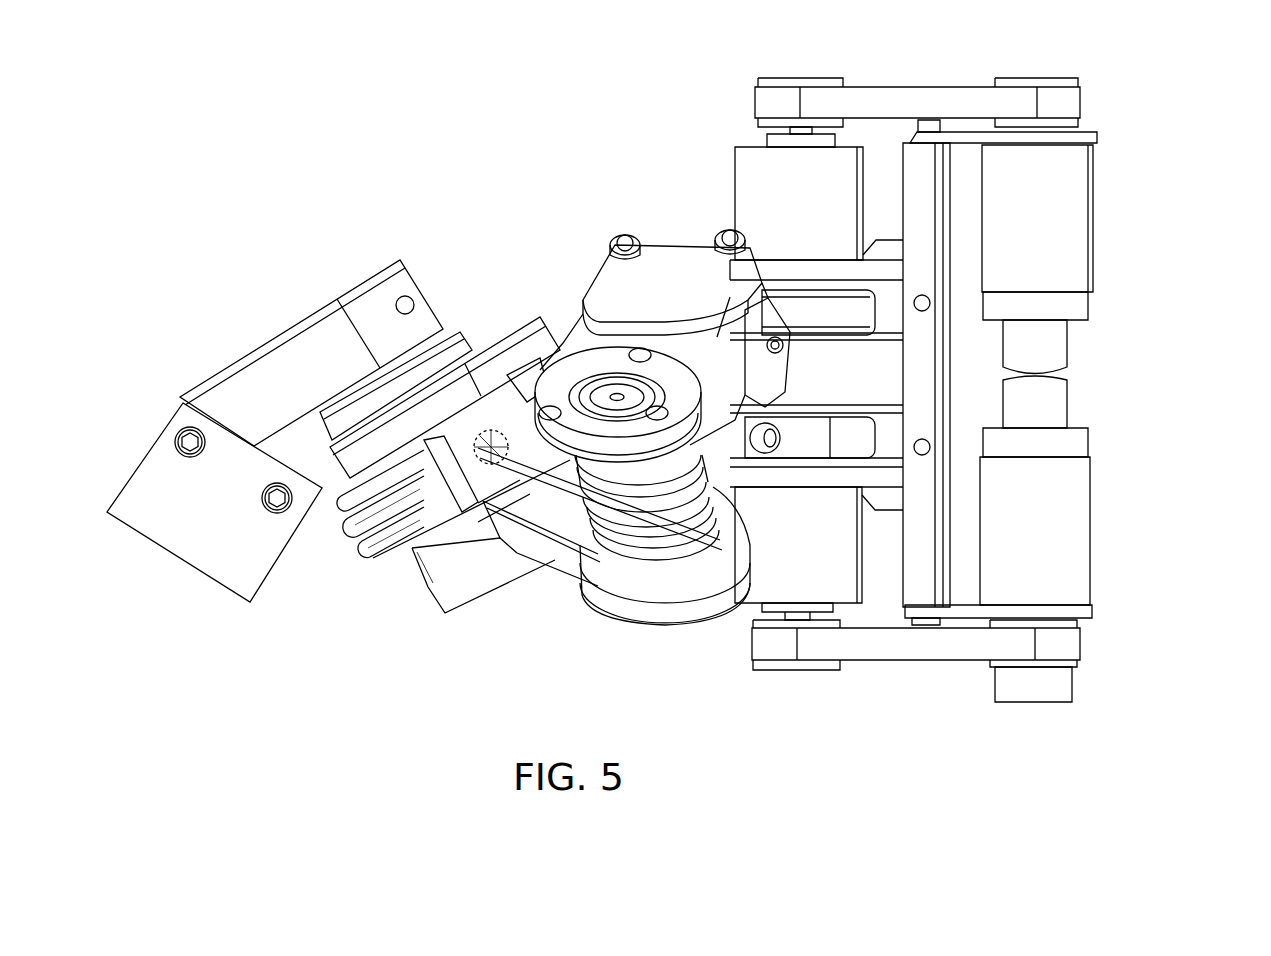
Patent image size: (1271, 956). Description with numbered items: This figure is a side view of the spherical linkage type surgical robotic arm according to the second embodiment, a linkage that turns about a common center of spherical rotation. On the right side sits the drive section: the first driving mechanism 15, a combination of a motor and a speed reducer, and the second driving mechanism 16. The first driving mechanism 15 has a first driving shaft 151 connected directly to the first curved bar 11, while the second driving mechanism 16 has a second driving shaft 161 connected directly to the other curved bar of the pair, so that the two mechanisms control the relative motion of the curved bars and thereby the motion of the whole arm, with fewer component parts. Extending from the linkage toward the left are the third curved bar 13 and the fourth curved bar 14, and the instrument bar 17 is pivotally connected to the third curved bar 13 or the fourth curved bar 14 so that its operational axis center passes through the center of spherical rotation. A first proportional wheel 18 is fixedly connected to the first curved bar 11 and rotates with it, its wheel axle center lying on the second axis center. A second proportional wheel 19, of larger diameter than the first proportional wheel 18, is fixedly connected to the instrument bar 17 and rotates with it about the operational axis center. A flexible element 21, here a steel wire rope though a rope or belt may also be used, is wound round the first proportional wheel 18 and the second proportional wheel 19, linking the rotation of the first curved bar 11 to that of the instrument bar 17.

The first curved bar 11 is at (708, 425).
The third curved bar 13 is at (518, 330).
The fourth curved bar 14 is at (555, 557).
The first driving mechanism 15 is at (1103, 218).
The second driving mechanism 16 is at (1100, 538).
The instrument bar 17 is at (262, 345).
The first proportional wheel 18 is at (620, 540).
The second proportional wheel 19 is at (405, 535).
The flexible element 21 is at (360, 548).
The first driving shaft 151 is at (772, 277).
The second driving shaft 161 is at (762, 457).